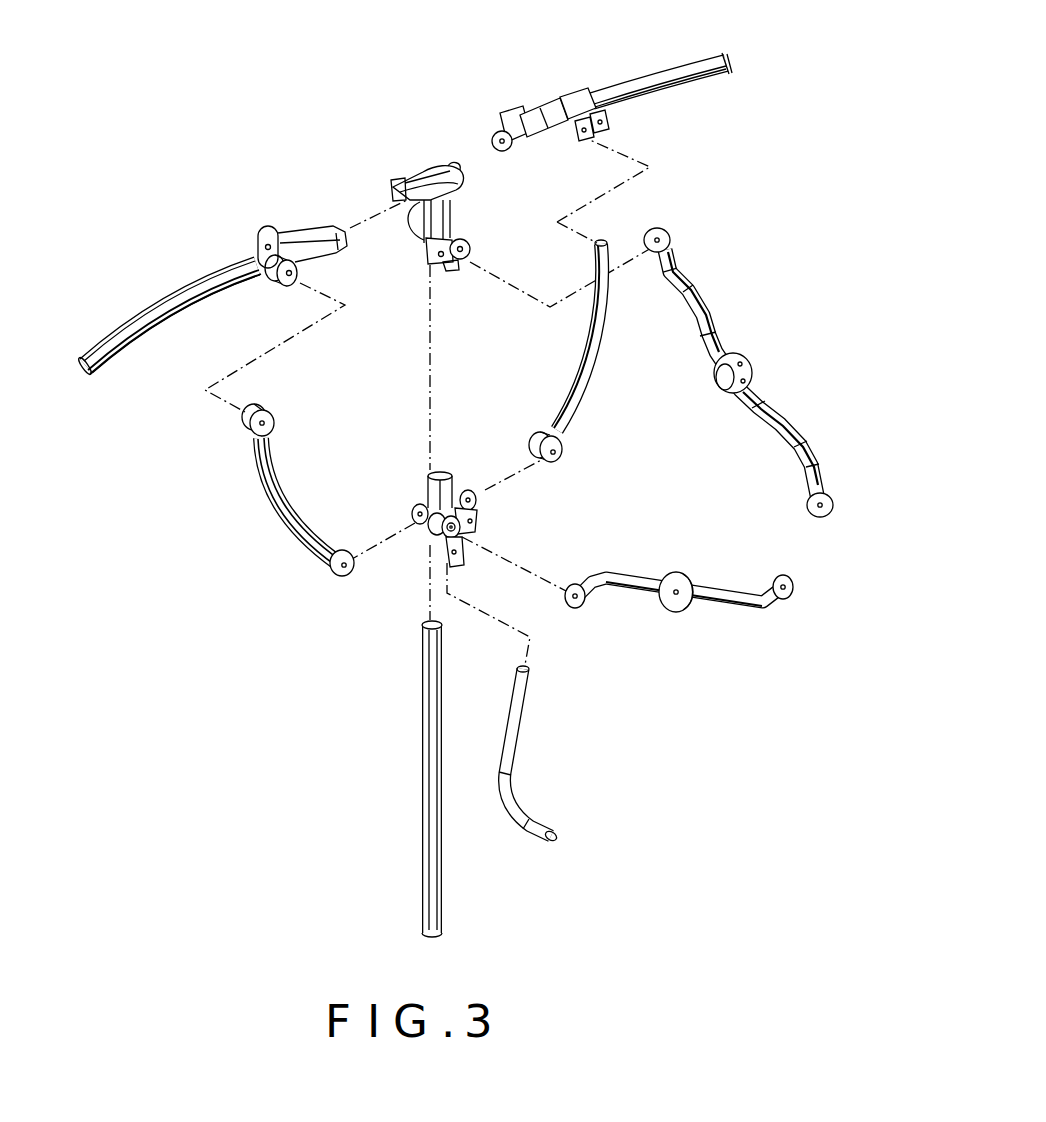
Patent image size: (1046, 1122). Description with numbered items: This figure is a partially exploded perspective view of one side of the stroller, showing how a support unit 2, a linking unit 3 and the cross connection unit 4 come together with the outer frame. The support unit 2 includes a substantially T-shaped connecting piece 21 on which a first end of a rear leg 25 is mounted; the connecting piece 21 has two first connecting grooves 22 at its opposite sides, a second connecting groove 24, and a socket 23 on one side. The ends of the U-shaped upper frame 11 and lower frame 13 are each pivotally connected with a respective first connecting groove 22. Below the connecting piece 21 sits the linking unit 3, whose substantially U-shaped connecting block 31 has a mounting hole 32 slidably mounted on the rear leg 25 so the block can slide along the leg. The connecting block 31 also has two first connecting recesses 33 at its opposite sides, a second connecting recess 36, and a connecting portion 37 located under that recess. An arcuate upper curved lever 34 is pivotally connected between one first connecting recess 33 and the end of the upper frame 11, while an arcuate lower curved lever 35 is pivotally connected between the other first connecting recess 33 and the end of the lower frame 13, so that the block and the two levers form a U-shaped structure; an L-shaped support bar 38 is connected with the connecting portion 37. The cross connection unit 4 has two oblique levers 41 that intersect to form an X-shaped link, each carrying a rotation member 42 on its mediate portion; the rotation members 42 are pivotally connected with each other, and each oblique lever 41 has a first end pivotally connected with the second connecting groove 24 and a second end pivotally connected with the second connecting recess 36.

The support unit 2 is at (376, 183).
The linking unit 3 is at (421, 588).
The cross connection unit 4 is at (699, 404).
The upper frame 11 is at (156, 310).
The lower frame 13 is at (617, 85).
The connecting piece 21 is at (430, 178).
The first connecting groove 22 is at (446, 164).
The socket 23 is at (412, 170).
The second connecting groove 24 is at (458, 268).
The rear leg 25 is at (430, 772).
The connecting block 31 is at (432, 515).
The mounting hole 32 is at (445, 476).
The first connecting recess 33 is at (472, 501).
The upper curved lever 34 is at (275, 497).
The lower curved lever 35 is at (583, 385).
The second connecting recess 36 is at (478, 522).
The connecting portion 37 is at (468, 556).
The support bar 38 is at (515, 740).
The oblique lever 41 is at (697, 300).
The rotation member 42 is at (750, 368).